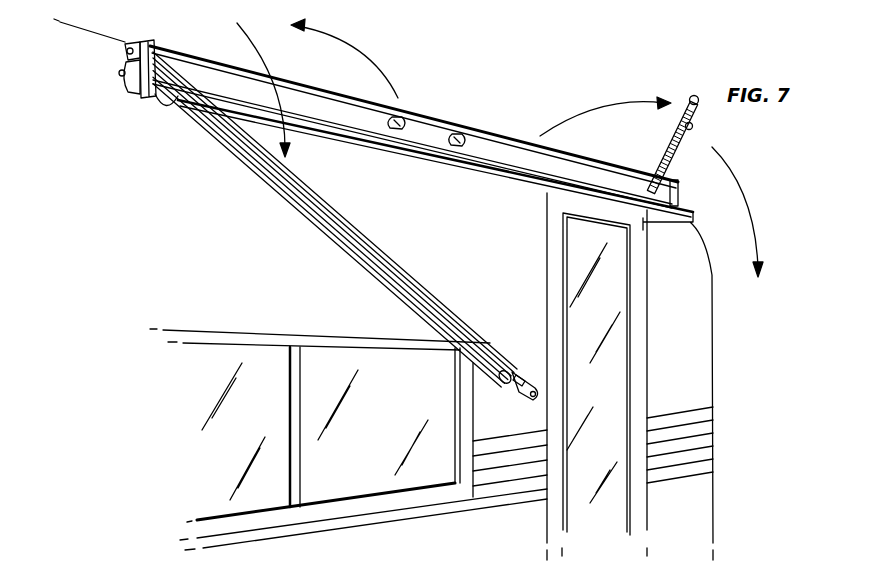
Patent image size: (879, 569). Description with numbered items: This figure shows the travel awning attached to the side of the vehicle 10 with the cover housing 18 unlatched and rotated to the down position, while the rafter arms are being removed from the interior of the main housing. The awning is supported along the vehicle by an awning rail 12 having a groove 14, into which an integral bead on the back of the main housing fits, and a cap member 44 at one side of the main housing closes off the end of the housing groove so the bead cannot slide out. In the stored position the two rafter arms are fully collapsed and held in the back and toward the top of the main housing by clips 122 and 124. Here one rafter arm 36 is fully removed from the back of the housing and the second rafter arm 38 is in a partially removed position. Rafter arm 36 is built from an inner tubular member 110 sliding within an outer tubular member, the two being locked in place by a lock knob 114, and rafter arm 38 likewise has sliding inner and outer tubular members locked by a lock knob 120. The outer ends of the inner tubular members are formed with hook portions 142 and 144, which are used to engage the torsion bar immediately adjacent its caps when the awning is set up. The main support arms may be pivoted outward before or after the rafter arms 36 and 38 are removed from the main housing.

The vehicle 10 is at (188, 208).
The awning rail 12 is at (124, 43).
The groove 14 is at (120, 58).
The cover housing 18 is at (187, 120).
The rafter arm 36 is at (412, 274).
The rafter arm 38 is at (673, 157).
The cap member 44 is at (140, 90).
The inner tubular member 110 is at (507, 393).
The lock knob 114 is at (502, 378).
The lock knob 120 is at (694, 127).
The clip 122 is at (413, 117).
The clip 124 is at (477, 131).
The hook portion 142 is at (537, 397).
The hook portion 144 is at (697, 98).